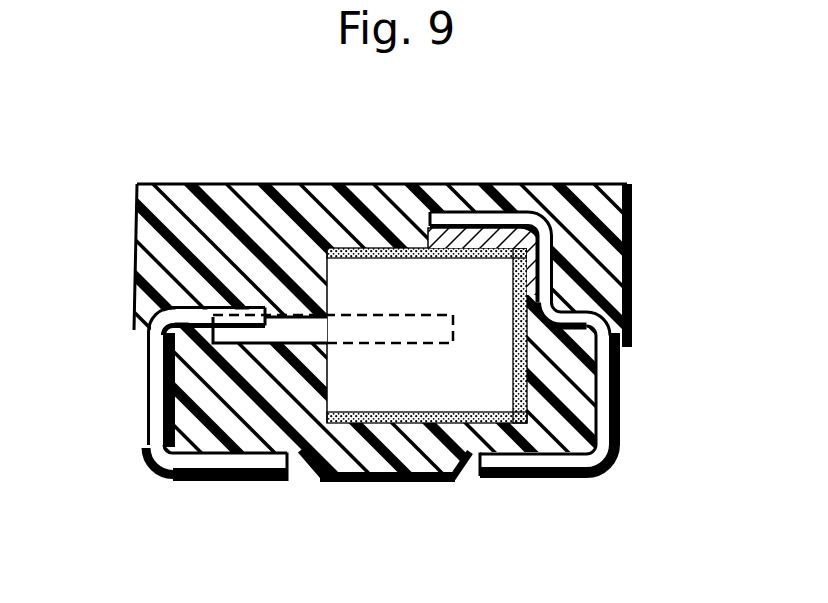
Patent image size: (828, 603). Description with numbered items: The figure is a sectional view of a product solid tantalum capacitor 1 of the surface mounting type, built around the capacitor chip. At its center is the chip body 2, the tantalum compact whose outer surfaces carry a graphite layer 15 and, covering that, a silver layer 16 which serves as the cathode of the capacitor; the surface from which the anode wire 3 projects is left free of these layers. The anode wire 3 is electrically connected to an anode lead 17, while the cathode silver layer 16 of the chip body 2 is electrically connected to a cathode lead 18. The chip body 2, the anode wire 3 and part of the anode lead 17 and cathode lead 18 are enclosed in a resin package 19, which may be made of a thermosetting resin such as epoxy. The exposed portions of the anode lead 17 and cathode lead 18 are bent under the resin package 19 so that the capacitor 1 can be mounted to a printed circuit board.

The solid tantalum capacitor 1 is at (641, 170).
The chip body 2 is at (407, 385).
The anode wire 3 is at (292, 345).
The graphite layer 15 is at (430, 246).
The silver layer 16 is at (430, 246).
The anode lead 17 is at (148, 398).
The cathode lead 18 is at (618, 400).
The resin package 19 is at (570, 186).